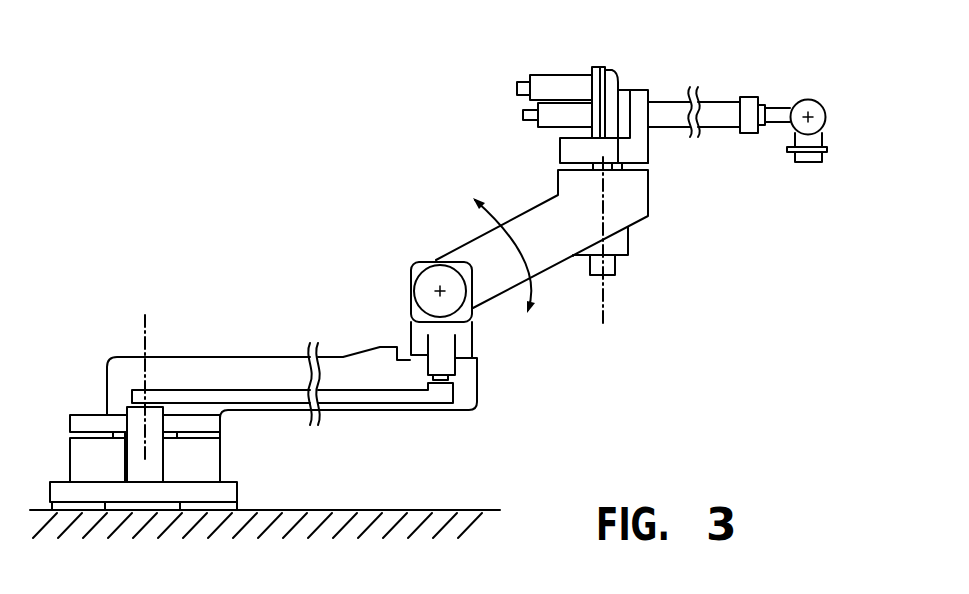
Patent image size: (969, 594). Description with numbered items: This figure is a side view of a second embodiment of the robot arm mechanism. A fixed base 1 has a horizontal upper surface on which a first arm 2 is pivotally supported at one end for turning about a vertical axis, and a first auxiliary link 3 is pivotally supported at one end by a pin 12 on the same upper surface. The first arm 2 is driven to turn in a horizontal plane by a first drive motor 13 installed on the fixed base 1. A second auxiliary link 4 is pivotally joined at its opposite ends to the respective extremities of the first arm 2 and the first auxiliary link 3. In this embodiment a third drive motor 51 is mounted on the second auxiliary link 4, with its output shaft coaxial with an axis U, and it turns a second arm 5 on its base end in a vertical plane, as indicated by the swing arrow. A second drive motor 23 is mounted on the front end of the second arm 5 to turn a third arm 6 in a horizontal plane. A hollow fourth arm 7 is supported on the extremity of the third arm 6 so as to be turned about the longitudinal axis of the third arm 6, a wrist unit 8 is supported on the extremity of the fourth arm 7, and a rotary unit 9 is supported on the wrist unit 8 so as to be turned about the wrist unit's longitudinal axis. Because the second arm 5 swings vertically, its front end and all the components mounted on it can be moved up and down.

The fixed base 1 is at (234, 491).
The pin 12 is at (135, 406).
The first drive motor 13 is at (75, 456).
The first arm 2 is at (288, 362).
The first auxiliary link 3 is at (383, 397).
The second auxiliary link 4 is at (470, 343).
The third drive motor 51 is at (433, 262).
The axis U is at (438, 290).
The second arm 5 is at (545, 255).
The second drive motor 23 is at (620, 246).
The third arm 6 is at (657, 106).
The fourth arm 7 is at (777, 110).
The wrist unit 8 is at (828, 119).
The rotary unit 9 is at (803, 163).